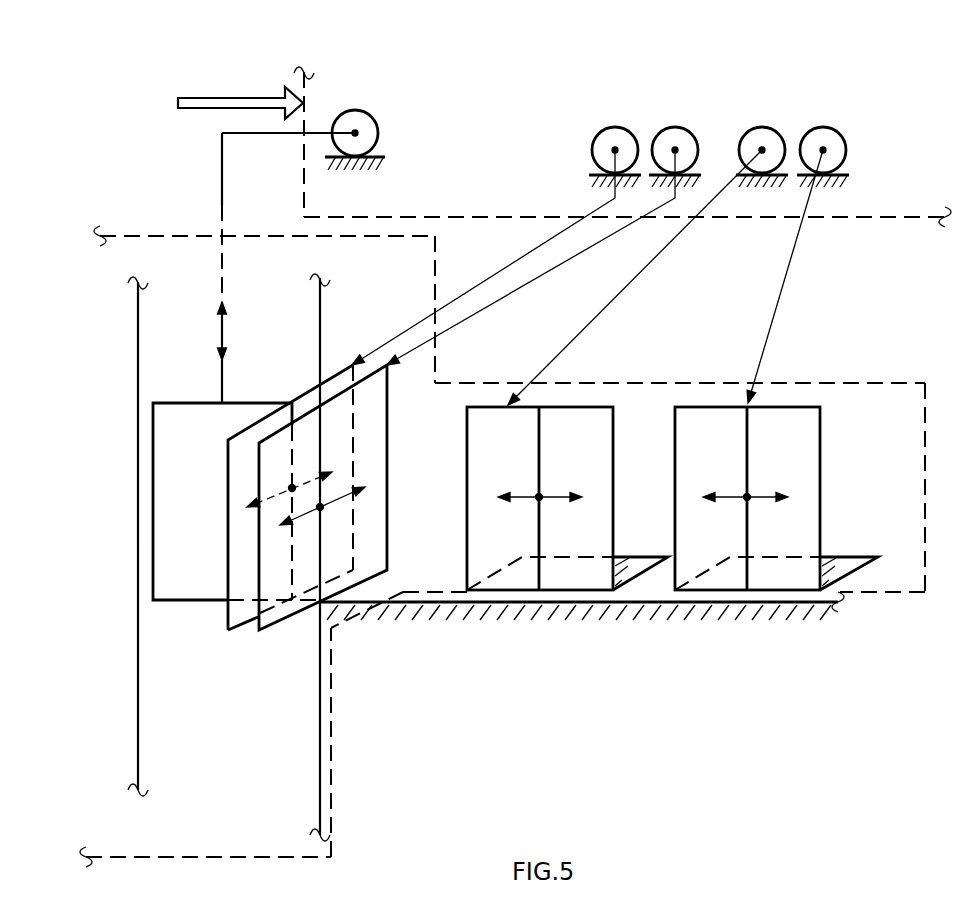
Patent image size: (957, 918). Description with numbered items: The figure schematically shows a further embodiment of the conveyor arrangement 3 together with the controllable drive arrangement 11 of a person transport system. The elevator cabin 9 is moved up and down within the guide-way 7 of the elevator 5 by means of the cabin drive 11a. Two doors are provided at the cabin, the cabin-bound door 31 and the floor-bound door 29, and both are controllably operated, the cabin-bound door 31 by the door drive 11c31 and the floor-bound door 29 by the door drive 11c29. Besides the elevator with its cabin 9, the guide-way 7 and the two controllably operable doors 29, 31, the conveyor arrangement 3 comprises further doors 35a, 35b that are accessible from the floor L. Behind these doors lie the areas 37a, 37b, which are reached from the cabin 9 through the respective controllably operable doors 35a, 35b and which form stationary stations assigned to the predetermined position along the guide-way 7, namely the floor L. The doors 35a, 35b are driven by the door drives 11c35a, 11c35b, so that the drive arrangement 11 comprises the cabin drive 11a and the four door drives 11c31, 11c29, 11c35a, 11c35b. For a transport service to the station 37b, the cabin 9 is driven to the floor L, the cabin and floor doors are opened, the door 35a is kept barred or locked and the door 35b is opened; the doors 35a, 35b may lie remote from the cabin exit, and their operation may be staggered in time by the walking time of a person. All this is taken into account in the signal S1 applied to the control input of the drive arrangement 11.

The conveyor arrangement 3 is at (236, 856).
The elevator 5 is at (118, 360).
The guide-way 7 is at (134, 684).
The elevator cabin 9 is at (203, 497).
The controllable drive arrangement 11 is at (905, 220).
The cabin drive 11a is at (380, 130).
The door drive for cabin-bound door 11c31 is at (607, 128).
The door drive for floor-bound door 11c29 is at (676, 128).
The door drive for door 35a 11c35a is at (758, 128).
The door drive for door 35b 11c35b is at (824, 128).
The floor-bound door 29 is at (257, 532).
The cabin-bound door 31 is at (227, 567).
The door 35a is at (517, 578).
The door 35b is at (780, 573).
The area 37a is at (637, 555).
The area 37b is at (840, 556).
The floor L is at (582, 616).
The signal S1 is at (240, 93).